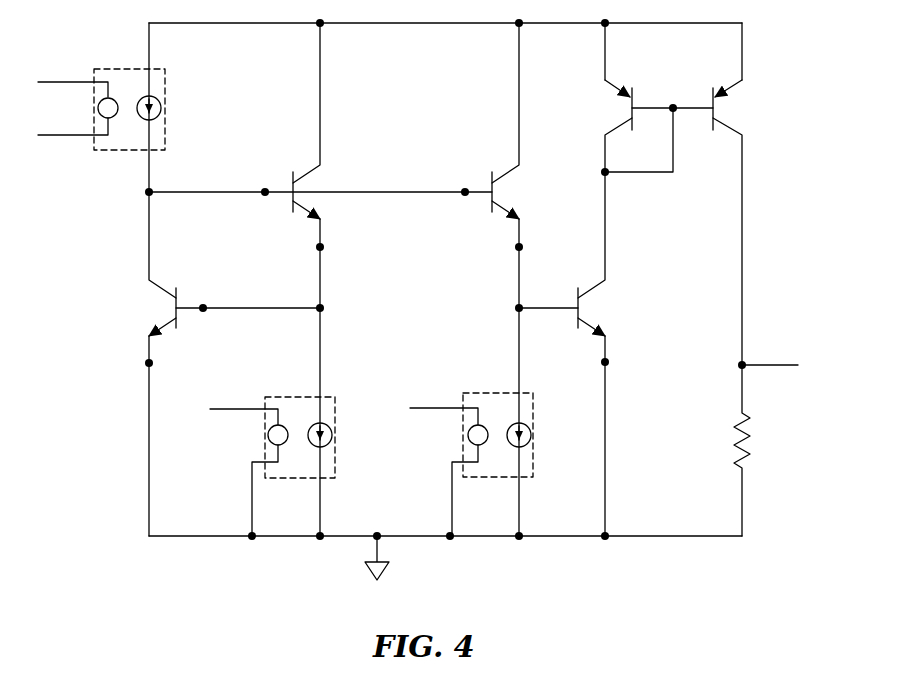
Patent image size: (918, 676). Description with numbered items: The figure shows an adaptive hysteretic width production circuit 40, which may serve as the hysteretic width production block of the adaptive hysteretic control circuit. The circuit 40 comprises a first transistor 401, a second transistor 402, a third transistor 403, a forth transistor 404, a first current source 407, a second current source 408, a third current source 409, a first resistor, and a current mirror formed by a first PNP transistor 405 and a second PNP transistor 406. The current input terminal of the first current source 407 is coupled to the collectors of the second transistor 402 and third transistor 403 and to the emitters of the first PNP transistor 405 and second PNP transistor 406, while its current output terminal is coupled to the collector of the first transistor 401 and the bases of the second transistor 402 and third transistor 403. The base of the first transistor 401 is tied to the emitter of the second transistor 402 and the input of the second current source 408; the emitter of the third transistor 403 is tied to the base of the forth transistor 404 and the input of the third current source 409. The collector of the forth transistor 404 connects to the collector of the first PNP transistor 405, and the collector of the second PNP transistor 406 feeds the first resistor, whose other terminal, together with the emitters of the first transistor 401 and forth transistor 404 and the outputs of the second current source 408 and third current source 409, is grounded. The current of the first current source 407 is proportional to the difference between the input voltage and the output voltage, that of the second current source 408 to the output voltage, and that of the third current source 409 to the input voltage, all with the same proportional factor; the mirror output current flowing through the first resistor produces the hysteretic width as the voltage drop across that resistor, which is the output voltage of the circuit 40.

The adaptive hysteretic width production circuit 40 is at (120, 478).
The first transistor 401 is at (158, 270).
The second transistor 402 is at (327, 172).
The third transistor 403 is at (520, 193).
The forth transistor 404 is at (612, 312).
The first PNP transistor 405 is at (618, 80).
The second PNP transistor 406 is at (745, 110).
The first current source 407 is at (172, 80).
The second current source 408 is at (335, 390).
The third current source 409 is at (540, 410).